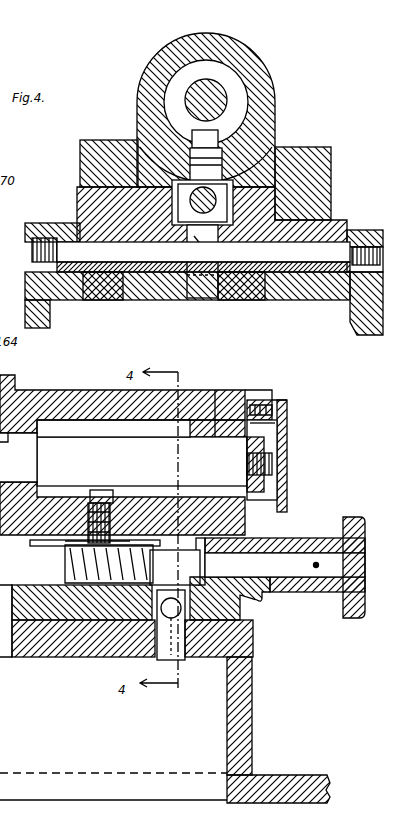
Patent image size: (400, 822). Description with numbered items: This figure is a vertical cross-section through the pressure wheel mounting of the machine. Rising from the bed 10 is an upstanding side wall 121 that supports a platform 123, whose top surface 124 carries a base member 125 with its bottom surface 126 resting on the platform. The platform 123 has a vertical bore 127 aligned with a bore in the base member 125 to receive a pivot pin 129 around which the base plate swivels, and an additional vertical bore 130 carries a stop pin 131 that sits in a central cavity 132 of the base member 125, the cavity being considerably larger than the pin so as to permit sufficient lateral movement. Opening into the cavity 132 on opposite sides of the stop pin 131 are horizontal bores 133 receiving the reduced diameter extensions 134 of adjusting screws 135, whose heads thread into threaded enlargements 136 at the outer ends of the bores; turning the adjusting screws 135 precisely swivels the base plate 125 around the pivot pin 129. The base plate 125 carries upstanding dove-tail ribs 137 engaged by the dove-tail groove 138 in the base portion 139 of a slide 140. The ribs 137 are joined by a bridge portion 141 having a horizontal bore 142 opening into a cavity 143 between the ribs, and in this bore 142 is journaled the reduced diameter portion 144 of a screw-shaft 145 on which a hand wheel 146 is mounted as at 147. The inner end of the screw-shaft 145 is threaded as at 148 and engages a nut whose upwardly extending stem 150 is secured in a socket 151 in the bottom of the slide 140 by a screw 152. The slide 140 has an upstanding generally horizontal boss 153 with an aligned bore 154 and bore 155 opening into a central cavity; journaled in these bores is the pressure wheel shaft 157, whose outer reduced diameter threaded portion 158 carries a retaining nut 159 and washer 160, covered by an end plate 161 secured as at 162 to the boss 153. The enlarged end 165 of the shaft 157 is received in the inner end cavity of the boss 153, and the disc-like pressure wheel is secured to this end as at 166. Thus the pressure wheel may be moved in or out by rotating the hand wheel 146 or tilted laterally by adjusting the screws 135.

The bed 10 is at (291, 769).
The side wall 121 is at (40, 742).
The platform 123 is at (65, 657).
The top surface 124 is at (232, 652).
The base member 125 is at (30, 596).
The bottom surface 126 is at (250, 622).
The vertical bore 127 is at (12, 657).
The pivot pin 129 is at (148, 300).
The vertical bore 130 is at (150, 300).
The stop pin 131 is at (205, 299).
The central cavity 132 is at (219, 299).
The horizontal bore 133 is at (92, 299).
The reduced diameter extension 134 is at (125, 298).
The adjusting screw 135 is at (380, 252).
The threaded enlargement 136 is at (337, 228).
The dove-tail rib 137 is at (290, 196).
The dove-tail groove 138 is at (268, 152).
The base portion 139 is at (332, 165).
The slide 140 is at (88, 157).
The bridge portion 141 is at (270, 541).
The horizontal bore 142 is at (264, 598).
The cavity 143 is at (88, 207).
The reduced diameter portion 144 is at (285, 565).
The screw-shaft 145 is at (132, 145).
The hand wheel 146 is at (350, 518).
The hand wheel mounting 147 is at (319, 565).
The threaded portion 148 is at (66, 578).
The stem 150 is at (122, 498).
The socket 151 is at (90, 492).
The screw 152 is at (196, 134).
The boss 153 is at (276, 112).
The bore 154 is at (201, 400).
The bore 155 is at (25, 433).
The pressure wheel shaft 157 is at (188, 96).
The threaded portion 158 is at (272, 462).
The retaining nut 159 is at (265, 445).
The washer 160 is at (262, 437).
The end plate 161 is at (275, 422).
The end plate fastening 162 is at (287, 408).
The enlarged end 165 is at (5, 377).
The pressure wheel fastening 166 is at (18, 457).